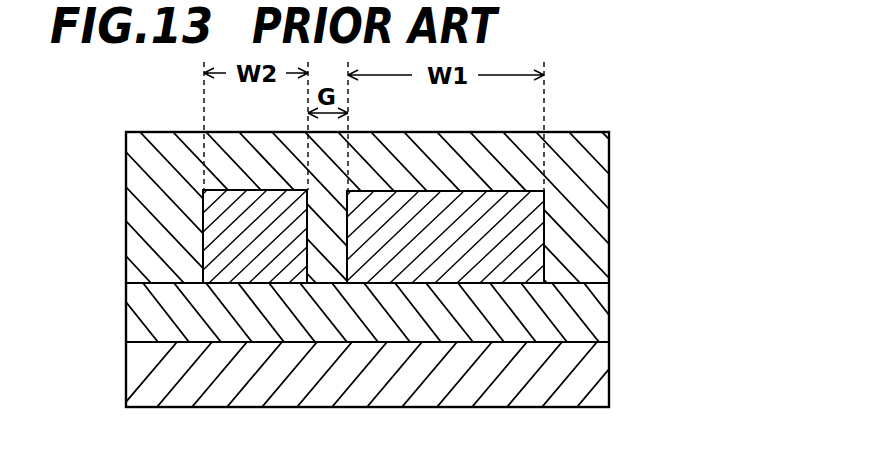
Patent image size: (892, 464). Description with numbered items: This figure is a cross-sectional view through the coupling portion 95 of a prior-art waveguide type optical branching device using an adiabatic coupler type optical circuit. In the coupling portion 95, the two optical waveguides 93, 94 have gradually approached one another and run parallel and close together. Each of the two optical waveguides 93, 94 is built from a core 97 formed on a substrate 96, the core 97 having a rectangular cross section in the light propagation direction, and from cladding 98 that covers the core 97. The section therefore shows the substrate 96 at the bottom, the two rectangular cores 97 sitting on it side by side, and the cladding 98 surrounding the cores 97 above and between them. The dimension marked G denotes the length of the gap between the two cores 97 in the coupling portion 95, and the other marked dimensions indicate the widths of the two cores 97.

The optical waveguide 93 is at (545, 191).
The optical waveguide 94 is at (215, 205).
The coupling portion 95 is at (652, 124).
The substrate 96 is at (583, 374).
The core 97 is at (536, 242).
The cladding 98 is at (597, 184).